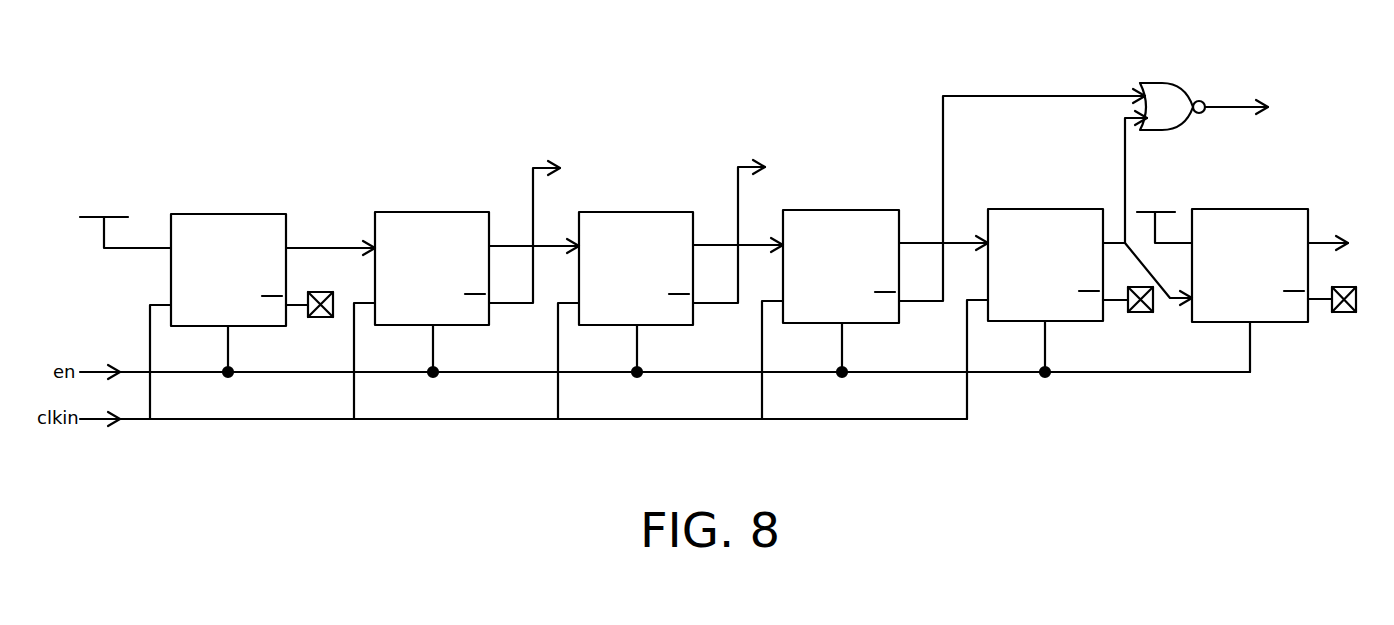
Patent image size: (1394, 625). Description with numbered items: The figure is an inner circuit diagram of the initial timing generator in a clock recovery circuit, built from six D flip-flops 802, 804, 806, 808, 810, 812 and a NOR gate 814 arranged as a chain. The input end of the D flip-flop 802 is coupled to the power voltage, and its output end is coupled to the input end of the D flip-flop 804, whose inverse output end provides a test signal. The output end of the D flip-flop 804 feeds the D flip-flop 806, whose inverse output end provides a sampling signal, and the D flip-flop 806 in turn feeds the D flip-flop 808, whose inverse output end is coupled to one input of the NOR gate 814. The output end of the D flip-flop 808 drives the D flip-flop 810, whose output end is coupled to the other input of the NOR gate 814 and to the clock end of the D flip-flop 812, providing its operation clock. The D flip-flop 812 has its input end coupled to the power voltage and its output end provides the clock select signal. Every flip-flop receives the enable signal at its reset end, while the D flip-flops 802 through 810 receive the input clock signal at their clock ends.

The D Flip-Flop 802 is at (228, 214).
The D Flip-Flop 804 is at (433, 212).
The D Flip-Flop 806 is at (637, 212).
The D Flip-Flop 808 is at (842, 210).
The D Flip-Flop 810 is at (1046, 209).
The D Flip-Flop 812 is at (1250, 209).
The NOR gate 814 is at (1150, 82).